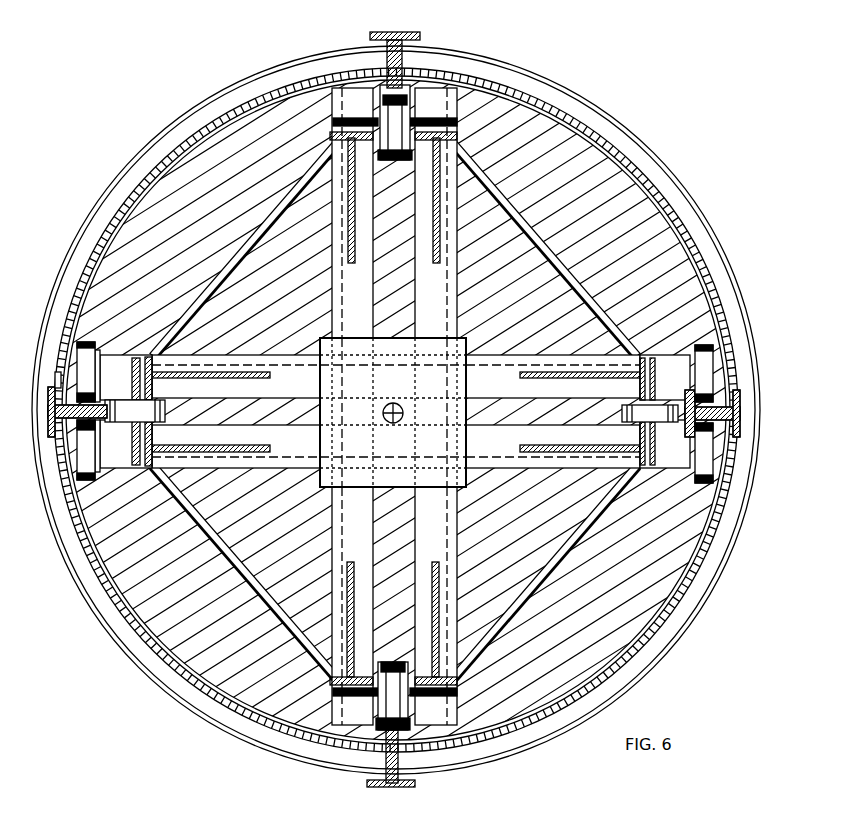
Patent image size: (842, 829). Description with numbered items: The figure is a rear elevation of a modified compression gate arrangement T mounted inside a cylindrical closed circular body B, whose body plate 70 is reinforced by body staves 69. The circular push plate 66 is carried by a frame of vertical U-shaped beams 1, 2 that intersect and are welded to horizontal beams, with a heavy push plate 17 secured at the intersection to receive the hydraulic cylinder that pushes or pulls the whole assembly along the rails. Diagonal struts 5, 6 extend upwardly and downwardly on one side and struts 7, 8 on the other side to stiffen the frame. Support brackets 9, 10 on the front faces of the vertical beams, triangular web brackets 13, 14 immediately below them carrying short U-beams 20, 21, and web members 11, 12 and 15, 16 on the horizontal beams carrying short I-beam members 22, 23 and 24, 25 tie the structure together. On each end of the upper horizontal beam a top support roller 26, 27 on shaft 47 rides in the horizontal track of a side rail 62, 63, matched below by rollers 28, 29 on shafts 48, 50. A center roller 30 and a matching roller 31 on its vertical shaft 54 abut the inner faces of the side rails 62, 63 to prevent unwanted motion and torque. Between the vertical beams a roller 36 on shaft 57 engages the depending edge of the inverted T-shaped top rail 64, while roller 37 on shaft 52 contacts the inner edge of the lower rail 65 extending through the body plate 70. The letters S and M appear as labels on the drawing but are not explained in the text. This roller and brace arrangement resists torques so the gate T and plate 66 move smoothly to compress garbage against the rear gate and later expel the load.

The vertical brace or beam 1 is at (452, 502).
The vertical brace or beam 2 is at (342, 498).
The strut 5 is at (252, 268).
The strut 6 is at (236, 560).
The strut 7 is at (556, 567).
The strut 8 is at (537, 244).
The support bracket 9 is at (447, 256).
The support bracket 10 is at (355, 222).
The support web member or bracket 11 is at (268, 377).
The support web member or bracket 12 is at (270, 447).
The bracket or plate 13 is at (357, 572).
The bracket or plate 14 is at (442, 572).
The bracket or support 15 is at (520, 447).
The bracket or support 16 is at (525, 376).
The push plate 17 is at (355, 375).
The short U-beam 20 is at (336, 688).
The short U-beam 21 is at (452, 690).
The short I-beam member 22 is at (155, 378).
The short I-beam member 23 is at (155, 440).
The short I-beam member 24 is at (636, 446).
The short I-beam member 25 is at (636, 379).
The top support roller 26 is at (88, 372).
The top support roller 27 is at (704, 373).
The roller 28 is at (88, 450).
The roller 29 is at (704, 453).
The center roller 30 is at (135, 411).
The roller 31 is at (650, 411).
The roller 36 is at (400, 160).
The roller 37 is at (392, 662).
The shaft 47 is at (56, 374).
The shaft 48 is at (50, 412).
The shaft 50 is at (136, 465).
The shaft 52 is at (457, 715).
The shaft 54 is at (658, 440).
The shaft 57 is at (458, 124).
The side rail 62 is at (48, 395).
The side rail 63 is at (742, 392).
The top rail 64 is at (383, 35).
The lower rail 65 is at (368, 785).
The push plate 66 is at (591, 108).
The body stave 69 is at (113, 201).
The body plate 70 is at (213, 123).
The compression gate arrangement T is at (606, 148).
The shell S is at (672, 232).
The circular body B is at (108, 628).
The mass M is at (636, 651).